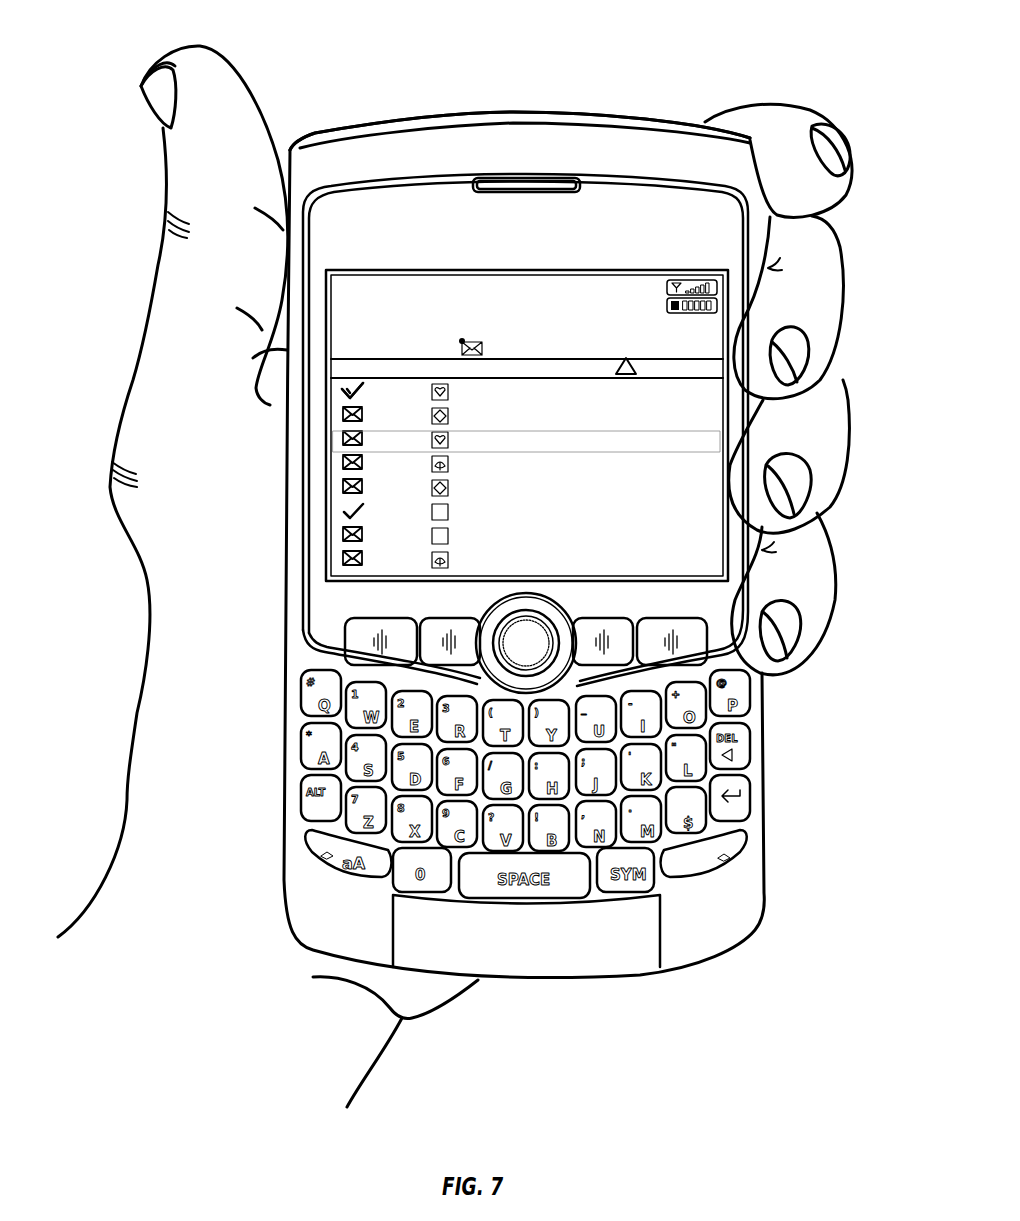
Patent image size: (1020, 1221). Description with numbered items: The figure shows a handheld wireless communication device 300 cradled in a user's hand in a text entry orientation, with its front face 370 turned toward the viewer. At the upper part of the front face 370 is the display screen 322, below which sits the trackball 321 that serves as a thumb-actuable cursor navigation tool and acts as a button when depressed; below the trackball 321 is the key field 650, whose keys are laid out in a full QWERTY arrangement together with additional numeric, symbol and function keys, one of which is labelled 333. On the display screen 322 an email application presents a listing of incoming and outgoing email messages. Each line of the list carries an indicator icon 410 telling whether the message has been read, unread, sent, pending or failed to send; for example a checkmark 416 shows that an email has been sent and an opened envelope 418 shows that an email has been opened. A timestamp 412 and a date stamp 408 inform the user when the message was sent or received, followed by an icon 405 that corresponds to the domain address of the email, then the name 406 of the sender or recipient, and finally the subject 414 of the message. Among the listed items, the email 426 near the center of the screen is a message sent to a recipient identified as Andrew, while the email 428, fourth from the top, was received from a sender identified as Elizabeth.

The handheld wireless communication device 300 is at (663, 50).
The display screen 322 is at (576, 282).
The trackball 321 is at (547, 684).
The front face 370 is at (759, 798).
The shift key 333 is at (740, 864).
The key field 650 is at (700, 898).
The icon 405 is at (442, 385).
The name 406 is at (481, 385).
The date stamp 408 is at (700, 381).
The indicator icon 410 is at (350, 385).
The timestamp 412 is at (397, 385).
The subject 414 is at (643, 383).
The checkmark 416 is at (338, 395).
The opened envelope 418 is at (338, 423).
The email 426 is at (338, 466).
The email 428 is at (338, 513).